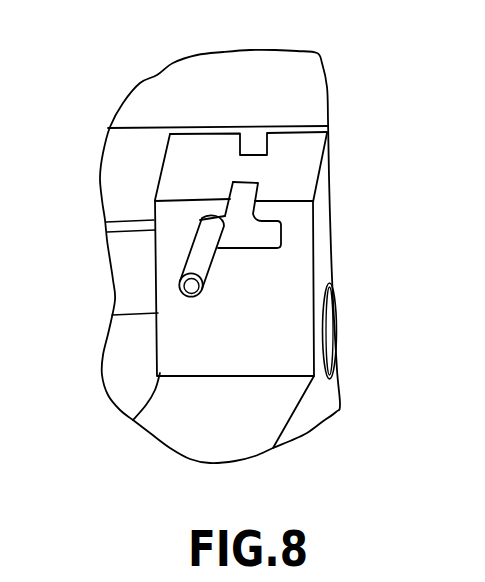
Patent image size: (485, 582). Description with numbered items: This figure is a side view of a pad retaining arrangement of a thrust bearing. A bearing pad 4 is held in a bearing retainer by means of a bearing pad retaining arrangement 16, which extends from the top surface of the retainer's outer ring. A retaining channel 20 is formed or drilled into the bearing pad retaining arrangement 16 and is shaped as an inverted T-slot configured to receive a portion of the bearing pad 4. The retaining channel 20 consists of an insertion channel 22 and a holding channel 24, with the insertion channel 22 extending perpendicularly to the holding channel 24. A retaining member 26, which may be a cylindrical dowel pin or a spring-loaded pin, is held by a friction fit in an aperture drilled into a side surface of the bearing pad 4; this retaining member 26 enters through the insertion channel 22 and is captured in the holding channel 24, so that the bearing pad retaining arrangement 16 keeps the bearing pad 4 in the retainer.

The bearing pad 4 is at (150, 67).
The bearing pad retaining arrangement 16 is at (306, 290).
The retaining channel 20 is at (247, 259).
The insertion channel 22 is at (238, 203).
The holding channel 24 is at (258, 230).
The retaining member 26 is at (195, 260).